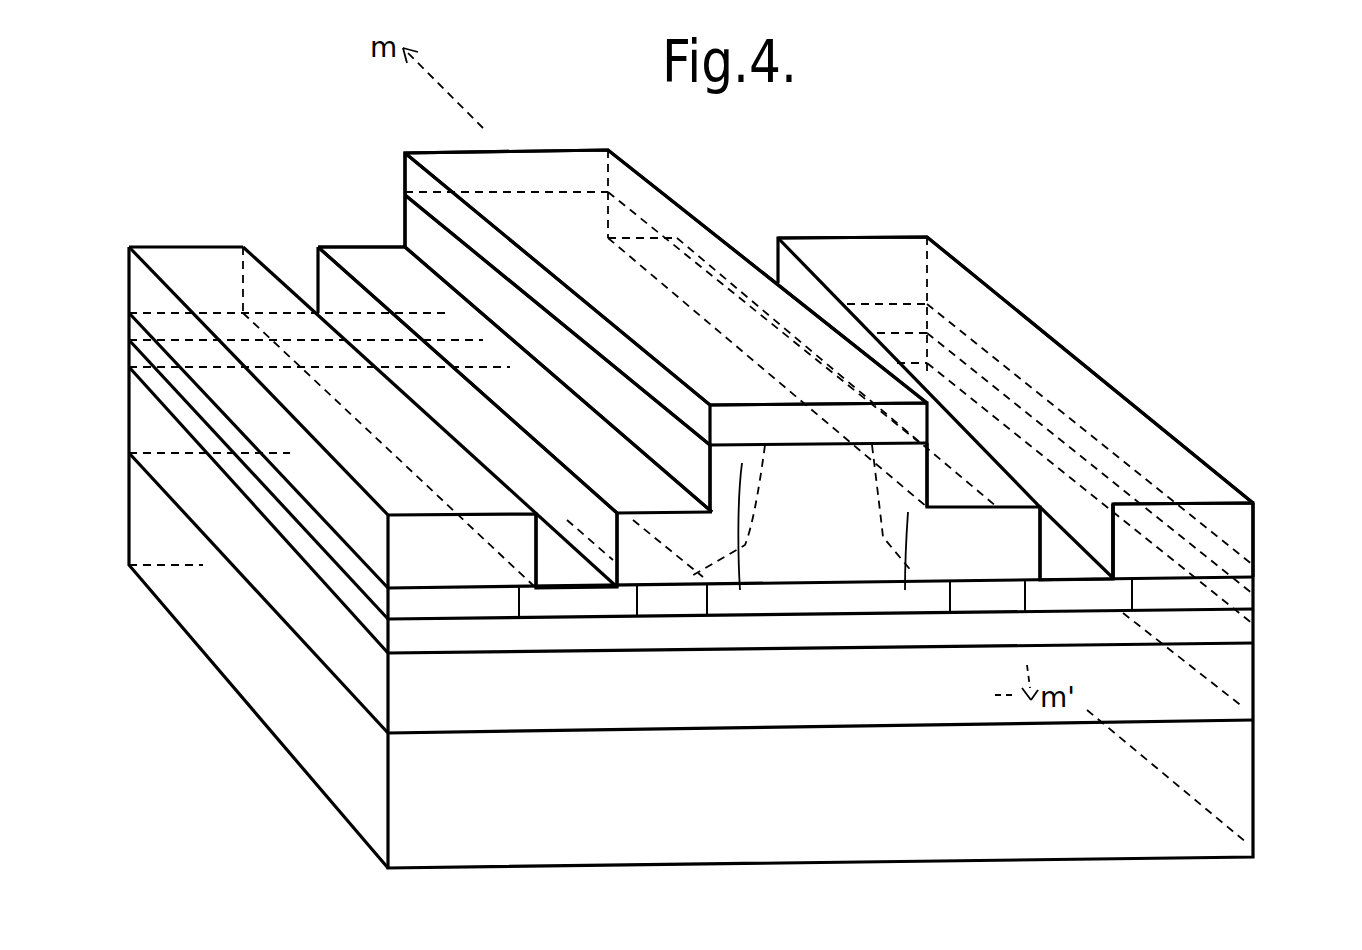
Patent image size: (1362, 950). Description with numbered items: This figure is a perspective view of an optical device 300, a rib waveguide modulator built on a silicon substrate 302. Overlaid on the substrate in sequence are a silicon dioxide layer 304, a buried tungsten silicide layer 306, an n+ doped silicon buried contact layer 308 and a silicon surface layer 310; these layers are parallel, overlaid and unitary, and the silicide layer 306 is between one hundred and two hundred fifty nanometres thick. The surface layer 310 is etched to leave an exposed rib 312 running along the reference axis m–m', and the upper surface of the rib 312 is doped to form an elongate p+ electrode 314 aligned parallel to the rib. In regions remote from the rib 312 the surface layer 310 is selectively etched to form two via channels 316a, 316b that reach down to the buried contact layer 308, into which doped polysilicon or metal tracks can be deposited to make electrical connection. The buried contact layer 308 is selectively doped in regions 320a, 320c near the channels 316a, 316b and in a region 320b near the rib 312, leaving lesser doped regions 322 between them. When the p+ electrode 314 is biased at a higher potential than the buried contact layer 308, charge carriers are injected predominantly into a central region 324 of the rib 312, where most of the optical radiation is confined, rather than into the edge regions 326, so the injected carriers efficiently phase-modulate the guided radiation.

The optical device 300 is at (757, 205).
The silicon substrate 302 is at (1215, 773).
The silicon dioxide layer 304 is at (414, 707).
The buried tungsten silicide layer 306 is at (768, 637).
The n+ doped silicon buried contact layer 308 is at (1257, 587).
The silicon surface layer 310 is at (1228, 528).
The rib 312 is at (427, 233).
The p+ electrode 314 is at (450, 163).
The via channel 316a is at (555, 573).
The via channel 316b is at (1070, 560).
The selectively doped region 320a is at (612, 603).
The selectively doped region 320b is at (938, 595).
The selectively doped region 320c is at (1123, 593).
The lesser doped regions 322 is at (414, 637).
The central region 324 is at (843, 491).
The edge regions 326 is at (740, 590).